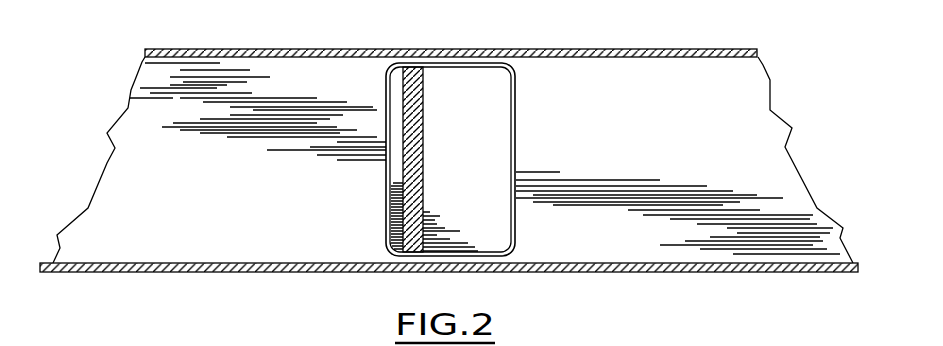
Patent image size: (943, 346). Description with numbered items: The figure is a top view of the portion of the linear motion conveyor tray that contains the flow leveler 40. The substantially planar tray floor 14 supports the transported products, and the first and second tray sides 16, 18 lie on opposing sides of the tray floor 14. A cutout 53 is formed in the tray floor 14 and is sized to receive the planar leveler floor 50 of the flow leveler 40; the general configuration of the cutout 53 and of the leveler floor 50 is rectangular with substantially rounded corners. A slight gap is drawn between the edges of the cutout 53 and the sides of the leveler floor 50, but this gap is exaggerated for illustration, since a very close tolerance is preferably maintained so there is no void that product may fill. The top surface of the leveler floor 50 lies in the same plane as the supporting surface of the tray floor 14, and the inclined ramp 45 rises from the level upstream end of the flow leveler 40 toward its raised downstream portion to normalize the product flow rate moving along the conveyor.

The tray floor 14 is at (222, 203).
The first tray side 16 is at (398, 49).
The second tray side 18 is at (245, 270).
The flow leveler 40 is at (543, 131).
The inclined ramp 45 is at (411, 102).
The planar leveler floor 50 is at (458, 147).
The cutout 53 is at (391, 214).